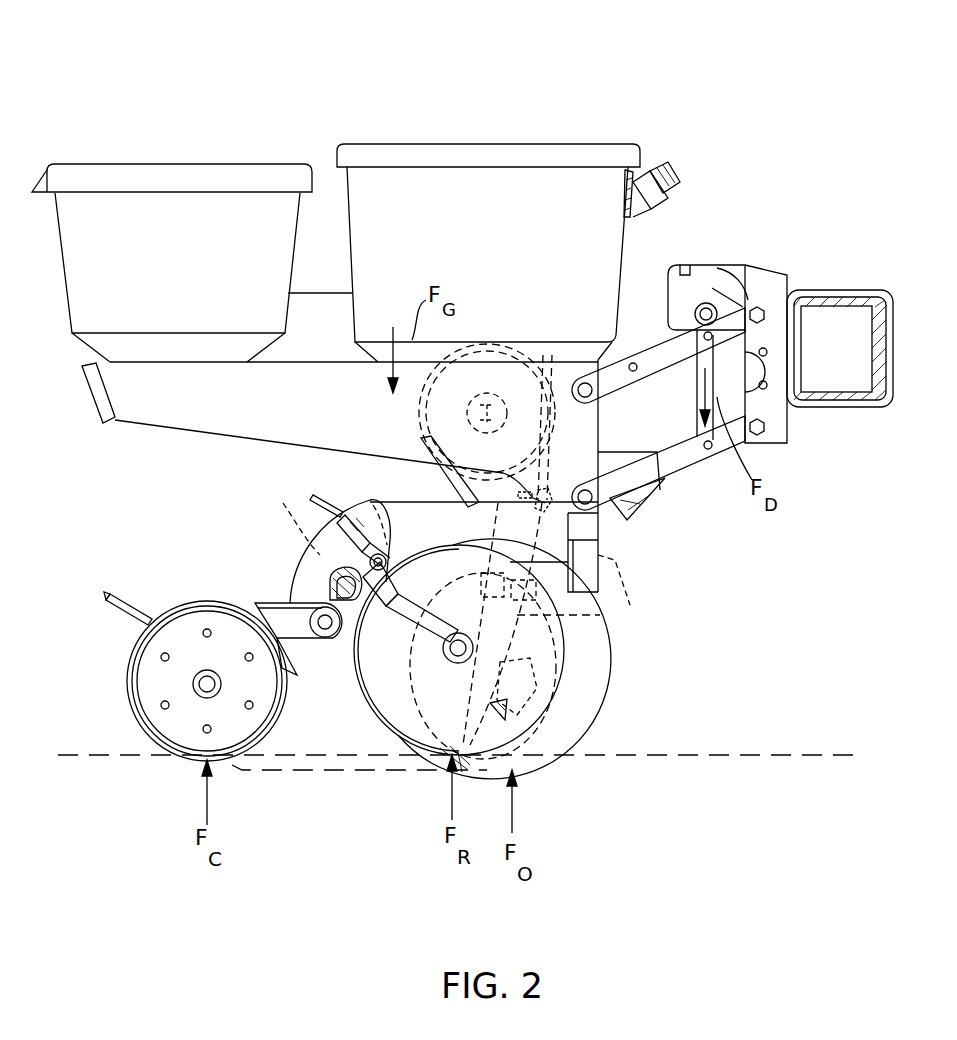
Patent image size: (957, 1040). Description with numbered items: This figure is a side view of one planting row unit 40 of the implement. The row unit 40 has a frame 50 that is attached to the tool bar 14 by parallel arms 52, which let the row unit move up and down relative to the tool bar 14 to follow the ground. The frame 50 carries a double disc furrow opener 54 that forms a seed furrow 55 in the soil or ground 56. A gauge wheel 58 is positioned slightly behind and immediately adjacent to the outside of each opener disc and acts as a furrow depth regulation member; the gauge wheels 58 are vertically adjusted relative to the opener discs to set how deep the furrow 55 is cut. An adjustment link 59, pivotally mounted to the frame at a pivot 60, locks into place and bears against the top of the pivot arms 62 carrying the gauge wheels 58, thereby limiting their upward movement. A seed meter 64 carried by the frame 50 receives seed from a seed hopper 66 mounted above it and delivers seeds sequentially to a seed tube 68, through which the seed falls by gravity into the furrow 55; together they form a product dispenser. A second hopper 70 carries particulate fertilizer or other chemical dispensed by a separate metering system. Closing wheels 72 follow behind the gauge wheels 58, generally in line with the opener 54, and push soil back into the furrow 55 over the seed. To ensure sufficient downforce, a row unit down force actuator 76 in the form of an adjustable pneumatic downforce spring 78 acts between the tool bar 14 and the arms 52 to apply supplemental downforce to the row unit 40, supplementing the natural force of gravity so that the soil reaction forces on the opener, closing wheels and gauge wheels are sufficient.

The row unit 40 is at (530, 85).
The tool bar 14 is at (852, 290).
The frame 50 is at (300, 565).
The parallel arms 52 is at (680, 447).
The double disc furrow opener 54 is at (583, 727).
The seed furrow 55 is at (300, 770).
The ground 56 is at (87, 755).
The gauge wheel 58 is at (403, 742).
The adjustment link 59 is at (313, 542).
The pivot 60 is at (372, 502).
The pivot arms 62 is at (365, 692).
The seed meter 64 is at (560, 375).
The seed hopper 66 is at (479, 260).
The seed tube 68 is at (630, 605).
The second hopper 70 is at (194, 270).
The closing wheels 72 is at (163, 750).
The row unit down force actuator 76 is at (713, 287).
The adjustable pneumatic downforce spring 78 is at (660, 302).